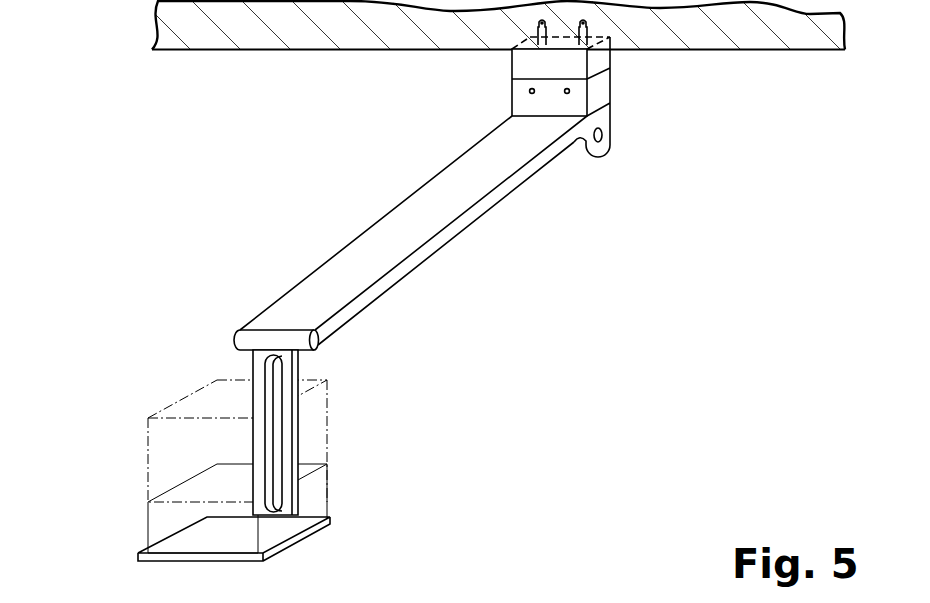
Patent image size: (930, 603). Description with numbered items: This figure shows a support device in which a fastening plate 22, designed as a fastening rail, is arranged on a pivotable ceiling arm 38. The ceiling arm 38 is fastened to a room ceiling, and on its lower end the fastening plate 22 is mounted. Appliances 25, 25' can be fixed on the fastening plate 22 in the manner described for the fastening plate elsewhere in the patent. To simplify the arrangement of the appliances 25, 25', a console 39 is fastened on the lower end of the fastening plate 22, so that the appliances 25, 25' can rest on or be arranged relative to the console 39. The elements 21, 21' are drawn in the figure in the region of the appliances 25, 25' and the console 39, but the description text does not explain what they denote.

The ceiling arm 38 is at (487, 296).
The fastening plate 22 is at (298, 362).
The console 39 is at (318, 527).
The sensor unit 21 is at (147, 460).
The appliance 25 is at (190, 441).
The second sensor unit 21' is at (143, 524).
The appliance 25' is at (189, 513).